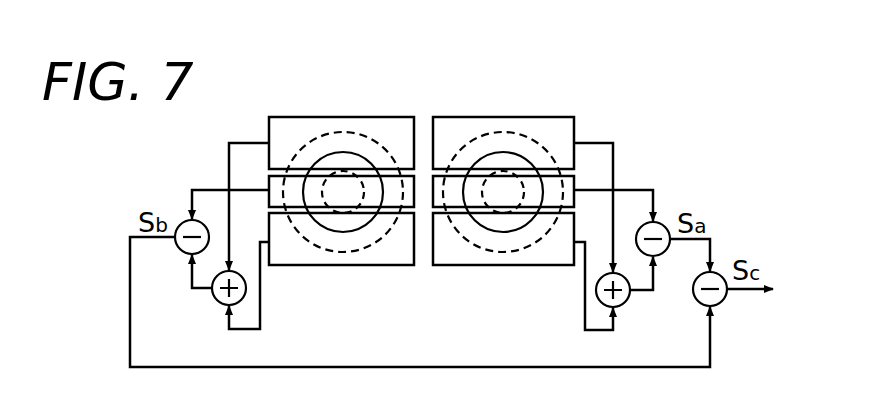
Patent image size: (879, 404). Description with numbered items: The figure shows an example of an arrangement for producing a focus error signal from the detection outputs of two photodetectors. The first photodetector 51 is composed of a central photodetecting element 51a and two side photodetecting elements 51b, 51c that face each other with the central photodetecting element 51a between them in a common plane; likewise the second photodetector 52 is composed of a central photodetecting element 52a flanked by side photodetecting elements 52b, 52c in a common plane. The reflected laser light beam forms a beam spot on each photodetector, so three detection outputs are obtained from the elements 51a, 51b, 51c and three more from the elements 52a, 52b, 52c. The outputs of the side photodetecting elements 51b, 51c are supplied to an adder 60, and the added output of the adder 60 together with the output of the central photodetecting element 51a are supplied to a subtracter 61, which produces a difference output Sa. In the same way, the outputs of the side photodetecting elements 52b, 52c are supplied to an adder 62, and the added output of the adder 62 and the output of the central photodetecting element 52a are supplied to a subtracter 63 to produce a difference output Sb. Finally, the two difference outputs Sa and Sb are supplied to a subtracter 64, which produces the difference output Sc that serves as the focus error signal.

The first photodetector 51 is at (508, 176).
The central photodetecting element 51a is at (440, 183).
The side photodetecting element 51b is at (555, 127).
The side photodetecting element 51c is at (473, 257).
The second photodetector 52 is at (350, 176).
The central photodetecting element 52a is at (408, 183).
The side photodetecting element 52b is at (342, 126).
The side photodetecting element 52c is at (360, 257).
The adder 60 is at (629, 299).
The subtracter 61 is at (661, 225).
The adder 62 is at (218, 303).
The subtracter 63 is at (182, 254).
The subtracter 64 is at (722, 301).